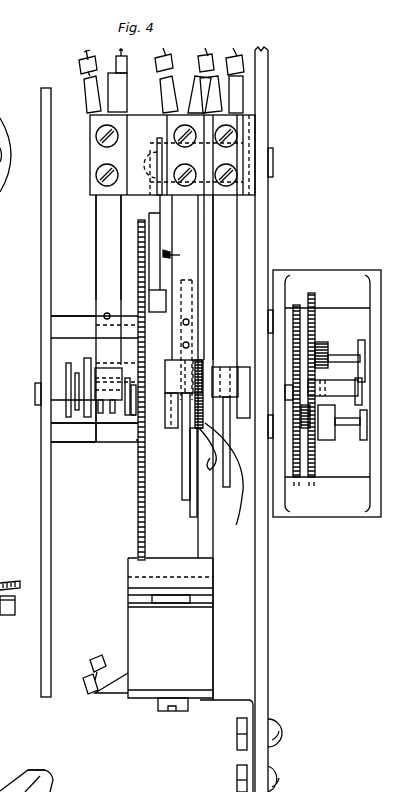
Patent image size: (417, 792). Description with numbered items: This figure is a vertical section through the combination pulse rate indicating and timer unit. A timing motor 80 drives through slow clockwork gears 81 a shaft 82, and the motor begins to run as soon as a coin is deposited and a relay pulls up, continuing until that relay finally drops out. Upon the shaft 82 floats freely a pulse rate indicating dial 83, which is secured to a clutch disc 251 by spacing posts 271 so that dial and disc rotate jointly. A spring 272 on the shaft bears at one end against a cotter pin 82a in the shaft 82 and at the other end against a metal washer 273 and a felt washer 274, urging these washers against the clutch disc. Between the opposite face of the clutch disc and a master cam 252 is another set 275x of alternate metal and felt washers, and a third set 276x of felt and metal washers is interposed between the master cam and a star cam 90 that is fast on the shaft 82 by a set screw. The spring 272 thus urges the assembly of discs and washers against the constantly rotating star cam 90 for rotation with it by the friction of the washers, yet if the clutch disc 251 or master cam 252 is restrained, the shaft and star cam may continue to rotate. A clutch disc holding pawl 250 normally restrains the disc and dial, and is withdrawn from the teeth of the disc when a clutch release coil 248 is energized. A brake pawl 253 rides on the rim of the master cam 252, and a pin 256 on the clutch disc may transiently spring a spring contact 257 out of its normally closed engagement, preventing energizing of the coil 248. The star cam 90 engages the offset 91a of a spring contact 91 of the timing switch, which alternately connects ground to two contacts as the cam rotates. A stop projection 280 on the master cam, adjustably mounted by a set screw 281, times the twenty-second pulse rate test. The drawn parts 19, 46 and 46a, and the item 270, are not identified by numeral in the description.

The support member 19 is at (9, 620).
The lever 46 is at (76, 783).
The lever block 46a is at (182, 385).
The timing motor 80 is at (320, 520).
The slow clockwork gears 81 is at (318, 328).
The shaft 82 is at (332, 395).
The cotter pin 82a is at (66, 388).
The pulse rate indicating dial 83 is at (36, 480).
The star cam 90 is at (230, 482).
The spring contact 91 is at (228, 275).
The offset 91a is at (241, 420).
The clutch release coil 248 is at (118, 628).
The clutch disc holding pawl 250 is at (128, 572).
The clutch disc 251 is at (133, 540).
The master cam 252 is at (183, 494).
The brake pawl 253 is at (160, 298).
The pin 256 is at (124, 374).
The spring contact 257 is at (108, 264).
The pawl 270 is at (174, 252).
The spacing posts 271 is at (82, 306).
The spring 272 is at (84, 420).
The metal washer 273 is at (136, 430).
The felt washer 274 is at (134, 420).
The set of alternate metal and felt washers 275x is at (140, 445).
The set of felt and metal washers 276x is at (229, 484).
The stop projection 280 is at (196, 519).
The set screw 281 is at (212, 447).